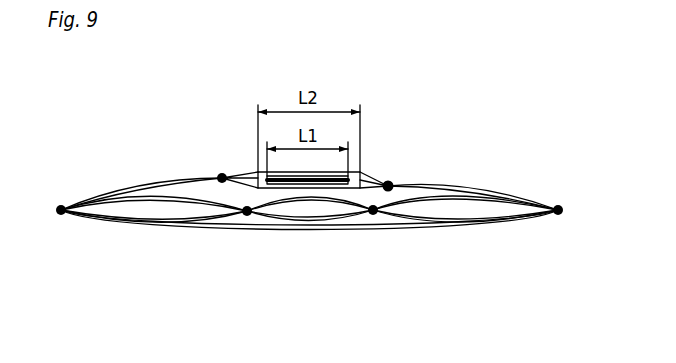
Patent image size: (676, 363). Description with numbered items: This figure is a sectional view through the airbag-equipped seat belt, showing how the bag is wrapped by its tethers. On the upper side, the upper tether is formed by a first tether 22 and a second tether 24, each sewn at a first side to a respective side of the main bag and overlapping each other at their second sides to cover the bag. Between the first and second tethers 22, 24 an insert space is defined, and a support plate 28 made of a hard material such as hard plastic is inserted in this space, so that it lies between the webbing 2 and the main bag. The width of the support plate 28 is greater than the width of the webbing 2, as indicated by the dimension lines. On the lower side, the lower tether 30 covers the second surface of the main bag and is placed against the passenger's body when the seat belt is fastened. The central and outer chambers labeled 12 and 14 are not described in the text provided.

The webbing 2 is at (336, 181).
The central inflatable chamber 12 is at (302, 227).
The outer inflatable chambers 14 is at (221, 228).
The first tether 22 is at (445, 183).
The second tether 24 is at (168, 178).
The support plate 28 is at (390, 179).
The lower tether 30 is at (347, 232).